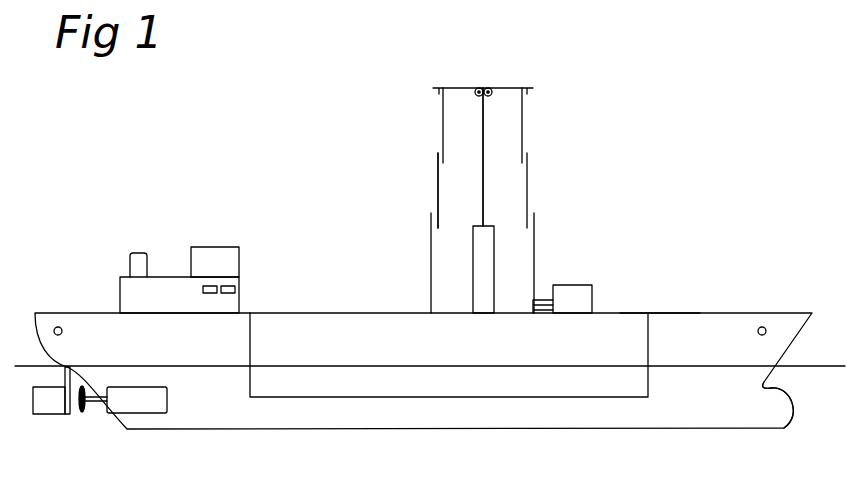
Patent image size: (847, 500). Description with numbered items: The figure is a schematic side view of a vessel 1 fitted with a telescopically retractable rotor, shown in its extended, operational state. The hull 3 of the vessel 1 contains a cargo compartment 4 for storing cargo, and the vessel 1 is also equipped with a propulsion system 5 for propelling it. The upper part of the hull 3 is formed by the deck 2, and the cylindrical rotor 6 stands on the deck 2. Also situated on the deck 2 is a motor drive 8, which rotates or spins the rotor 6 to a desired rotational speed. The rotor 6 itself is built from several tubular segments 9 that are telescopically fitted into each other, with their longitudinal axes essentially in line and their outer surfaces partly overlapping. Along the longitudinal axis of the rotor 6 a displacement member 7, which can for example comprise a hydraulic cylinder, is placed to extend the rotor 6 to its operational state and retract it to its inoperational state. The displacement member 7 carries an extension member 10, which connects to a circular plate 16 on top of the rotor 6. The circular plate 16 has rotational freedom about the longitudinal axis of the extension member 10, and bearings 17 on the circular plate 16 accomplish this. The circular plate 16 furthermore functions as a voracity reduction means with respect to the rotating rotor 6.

The vessel 1 is at (707, 218).
The deck 2 is at (627, 313).
The hull 3 is at (766, 414).
The cargo compartment 4 is at (318, 380).
The propulsion system 5 is at (147, 400).
The cylindrical rotor 6 is at (562, 130).
The displacement member 7 is at (483, 252).
The motor drive 8 is at (580, 289).
The tubular segments 9 is at (438, 187).
The extension member 10 is at (483, 147).
The circular plate 16 is at (514, 88).
The bearings 17 is at (479, 88).